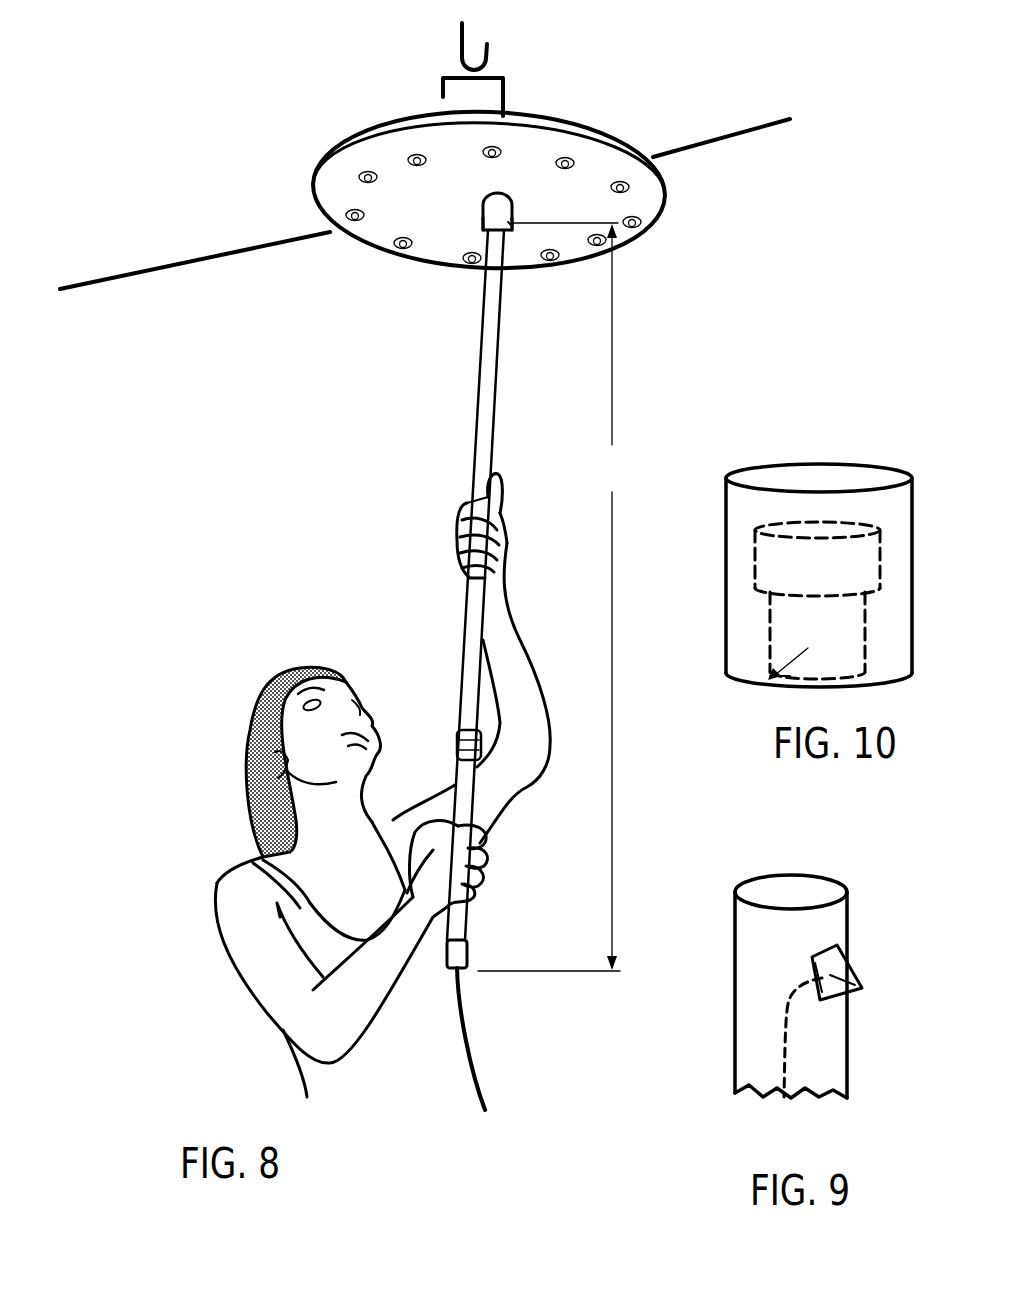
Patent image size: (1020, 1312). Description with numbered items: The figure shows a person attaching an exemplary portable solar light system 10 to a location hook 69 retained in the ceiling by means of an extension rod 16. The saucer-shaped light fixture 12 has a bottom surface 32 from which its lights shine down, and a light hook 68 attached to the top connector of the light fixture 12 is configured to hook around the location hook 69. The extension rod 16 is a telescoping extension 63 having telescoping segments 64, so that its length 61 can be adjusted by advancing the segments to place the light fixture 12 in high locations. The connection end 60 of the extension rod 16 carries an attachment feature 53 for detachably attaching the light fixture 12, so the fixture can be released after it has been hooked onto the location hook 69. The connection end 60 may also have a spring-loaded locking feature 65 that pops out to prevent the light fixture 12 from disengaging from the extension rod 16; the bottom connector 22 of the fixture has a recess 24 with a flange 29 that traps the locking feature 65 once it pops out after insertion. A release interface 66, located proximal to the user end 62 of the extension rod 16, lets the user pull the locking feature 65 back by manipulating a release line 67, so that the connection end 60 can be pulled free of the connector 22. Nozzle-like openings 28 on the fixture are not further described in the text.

In FIG. 8, the portable solar light system 10 is at (323, 141).
In FIG. 8, the light fixture 12 is at (650, 202).
In FIG. 8, the extension rod 16 is at (484, 410).
In FIG. 9, the extension rod 16 is at (767, 967).
In FIG. 8, the bottom connector 22 is at (483, 214).
In FIG. 10, the bottom connector 22 is at (755, 628).
In FIG. 10, the recess 24 is at (797, 643).
In FIG. 8, the nozzles 28 is at (352, 232).
In FIG. 10, the flange 29 is at (765, 588).
In FIG. 8, the bottom surface 32 is at (633, 230).
In FIG. 8, the attachment feature 53 is at (508, 230).
In FIG. 10, the attachment feature 53 is at (782, 677).
In FIG. 9, the attachment feature 53 is at (845, 982).
In FIG. 8, the connection end 60 is at (490, 232).
In FIG. 9, the connection end 60 is at (810, 890).
In FIG. 8, the length 61 is at (556, 597).
In FIG. 8, the user end 62 is at (468, 960).
In FIG. 8, the telescoping extension 63 is at (467, 637).
In FIG. 8, the telescoping segments 64 is at (478, 437).
In FIG. 9, the locking feature 65 is at (840, 958).
In FIG. 8, the release interface 66 is at (457, 737).
In FIG. 9, the release line 67 is at (790, 1048).
In FIG. 8, the light hook 68 is at (507, 82).
In FIG. 8, the location hook 69 is at (457, 45).